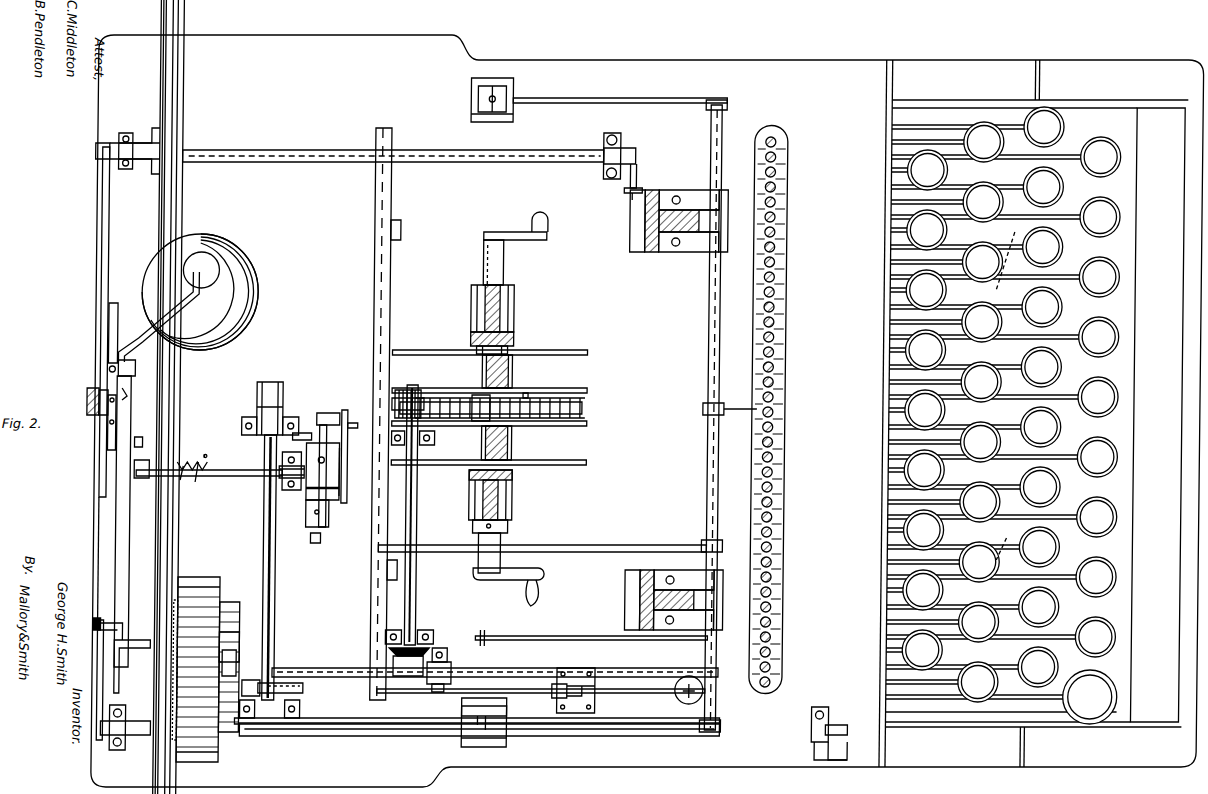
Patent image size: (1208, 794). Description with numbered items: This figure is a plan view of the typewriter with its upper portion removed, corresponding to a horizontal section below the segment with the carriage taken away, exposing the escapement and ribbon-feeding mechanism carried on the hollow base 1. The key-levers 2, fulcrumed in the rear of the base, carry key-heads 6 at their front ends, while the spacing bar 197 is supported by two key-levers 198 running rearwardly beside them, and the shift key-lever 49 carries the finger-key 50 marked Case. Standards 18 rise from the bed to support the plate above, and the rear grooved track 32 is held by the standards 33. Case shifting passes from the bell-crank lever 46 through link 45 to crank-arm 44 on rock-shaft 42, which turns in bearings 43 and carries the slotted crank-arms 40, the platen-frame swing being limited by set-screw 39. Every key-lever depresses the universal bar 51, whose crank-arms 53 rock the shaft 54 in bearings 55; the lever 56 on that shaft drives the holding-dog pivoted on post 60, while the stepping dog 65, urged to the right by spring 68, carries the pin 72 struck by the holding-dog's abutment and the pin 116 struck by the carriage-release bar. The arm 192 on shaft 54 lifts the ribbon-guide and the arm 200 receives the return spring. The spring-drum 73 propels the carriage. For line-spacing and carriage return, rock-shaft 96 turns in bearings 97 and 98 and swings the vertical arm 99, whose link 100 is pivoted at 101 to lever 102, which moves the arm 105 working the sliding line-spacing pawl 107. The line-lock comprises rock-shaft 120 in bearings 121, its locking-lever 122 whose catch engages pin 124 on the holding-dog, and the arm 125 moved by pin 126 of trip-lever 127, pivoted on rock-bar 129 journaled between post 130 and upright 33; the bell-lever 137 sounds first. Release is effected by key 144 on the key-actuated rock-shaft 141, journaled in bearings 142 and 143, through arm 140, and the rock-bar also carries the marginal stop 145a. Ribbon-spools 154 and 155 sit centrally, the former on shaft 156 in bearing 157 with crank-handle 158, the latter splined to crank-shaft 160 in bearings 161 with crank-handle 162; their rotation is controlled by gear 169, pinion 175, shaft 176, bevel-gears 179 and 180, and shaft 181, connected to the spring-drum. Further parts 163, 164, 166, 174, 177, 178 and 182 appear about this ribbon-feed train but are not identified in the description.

The hollow base 1 is at (784, 390).
The key-levers 2 is at (1004, 389).
The key-heads 6 is at (940, 292).
The standards 18 is at (628, 233).
The grooved track 32 is at (166, 533).
The standards 33 is at (124, 658).
The set-screw 39 is at (94, 624).
The slotted crank-arms 40 is at (283, 393).
The rock-shaft 42 is at (265, 545).
The bearings 43 is at (258, 436).
The crank-arm 44 is at (296, 658).
The link 45 is at (638, 178).
The bell-crank lever 46 is at (640, 688).
The shift key-lever 49 is at (1020, 712).
The finger-key 50 is at (1089, 697).
The universal bar 51 is at (489, 122).
The crank-arms 53 is at (636, 98).
The rock-shaft 54 is at (700, 345).
The bearings 55 is at (715, 238).
The lever 56 is at (585, 552).
The post 60 is at (305, 500).
The stepping dog 65 is at (352, 456).
The spring 68 is at (310, 538).
The pin 72 is at (330, 410).
The drum 73 is at (196, 669).
The rock-shaft 96 is at (512, 162).
The bearing 97 is at (598, 140).
The bearing 98 is at (133, 172).
The vertical arm 99 is at (92, 160).
The bar or link 100 is at (107, 236).
The pivot 101 is at (88, 398).
The lever 102 is at (97, 415).
The arm 105 is at (232, 620).
The sliding line-spacing pawl 107 is at (225, 663).
The pin 116 is at (355, 418).
The rock-shaft 120 is at (240, 470).
The bearings 121 is at (283, 480).
The locking-lever 122 is at (288, 484).
The pin 124 is at (308, 430).
The arm 125 is at (145, 472).
The pin 126 is at (143, 446).
The trip-lever 127 is at (108, 440).
The rock-bar 129 is at (117, 545).
The post 130 is at (135, 367).
The bell-lever 137 is at (120, 352).
The arm 140 is at (100, 680).
The key-actuated rock-shaft 141 is at (319, 727).
The bearing 142 is at (135, 738).
The bearing 143 is at (814, 742).
The hand-operated key 144 is at (841, 760).
The stop 145a is at (128, 396).
The ribbon-spool 154 is at (582, 428).
The ribbon-spool 155 is at (582, 356).
The shaft 156 is at (502, 540).
The bearing 157 is at (513, 494).
The crank-handle 158 is at (510, 582).
The crank-shaft 160 is at (502, 270).
The bearings 161 is at (513, 310).
The crank-handle 162 is at (532, 240).
The collar 163 is at (468, 344).
The collar 164 is at (508, 350).
The shaft 166 is at (482, 280).
The gear 169 is at (585, 410).
The pin 174 is at (528, 393).
The pinion 175 is at (424, 403).
The shaft 176 is at (418, 512).
The bracket 177 is at (435, 448).
The bracket 178 is at (424, 632).
The bevel-gear 179 is at (450, 650).
The bevel-gear 180 is at (418, 680).
The shaft 181 is at (326, 658).
The block 182 is at (452, 672).
The arm 192 is at (742, 409).
The spacing key or bar 197 is at (1157, 415).
The key-levers 198 is at (930, 740).
The arm 200 is at (548, 632).